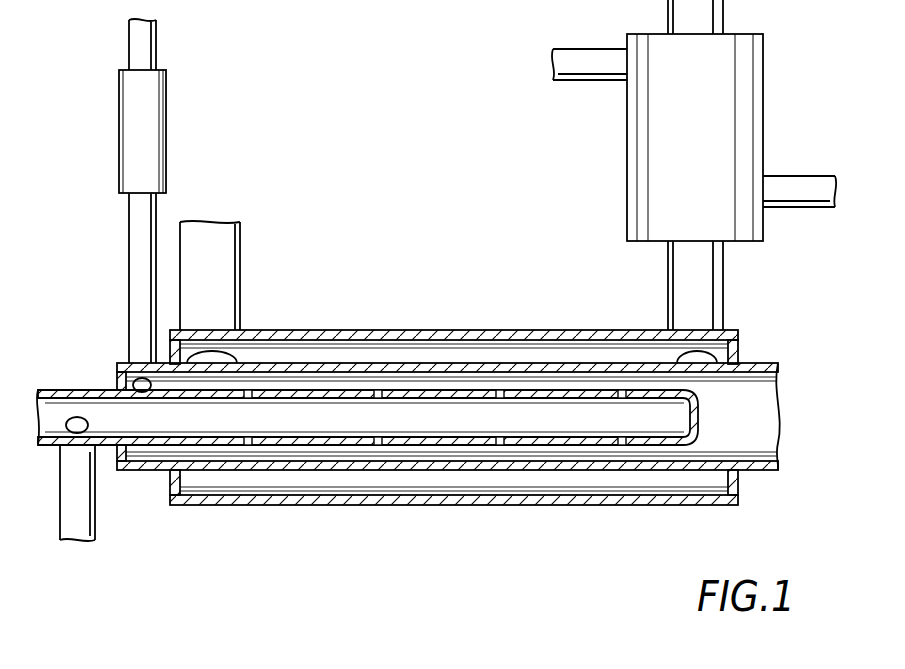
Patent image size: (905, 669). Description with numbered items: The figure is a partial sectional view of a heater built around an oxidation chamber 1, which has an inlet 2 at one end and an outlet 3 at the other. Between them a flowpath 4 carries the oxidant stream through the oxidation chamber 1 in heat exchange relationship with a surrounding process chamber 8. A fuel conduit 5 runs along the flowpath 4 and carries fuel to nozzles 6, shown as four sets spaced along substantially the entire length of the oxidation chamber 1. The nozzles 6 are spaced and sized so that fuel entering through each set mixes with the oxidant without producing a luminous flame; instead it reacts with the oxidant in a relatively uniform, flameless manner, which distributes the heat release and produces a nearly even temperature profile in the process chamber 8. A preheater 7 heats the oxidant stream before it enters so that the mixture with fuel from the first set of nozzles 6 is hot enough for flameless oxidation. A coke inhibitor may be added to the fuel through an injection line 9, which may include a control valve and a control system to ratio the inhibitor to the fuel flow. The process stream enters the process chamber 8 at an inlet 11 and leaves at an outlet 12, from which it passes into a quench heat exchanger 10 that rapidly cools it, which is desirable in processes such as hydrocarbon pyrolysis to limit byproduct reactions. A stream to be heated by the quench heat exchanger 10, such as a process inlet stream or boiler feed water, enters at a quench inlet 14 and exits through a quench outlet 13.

The oxidation chamber 1 is at (383, 385).
The inlet 2 is at (140, 378).
The outlet 3 is at (737, 393).
The flowpath 4 is at (505, 387).
The fuel conduit 5 is at (107, 428).
The nozzles 6 is at (250, 446).
The preheater 7 is at (167, 105).
The process chamber 8 is at (290, 352).
The injection line 9 is at (96, 514).
The quench heat exchanger 10 is at (627, 152).
The inlet 11 is at (218, 358).
The outlet 12 is at (690, 358).
The quench outlet 13 is at (581, 48).
The quench inlet 14 is at (800, 176).